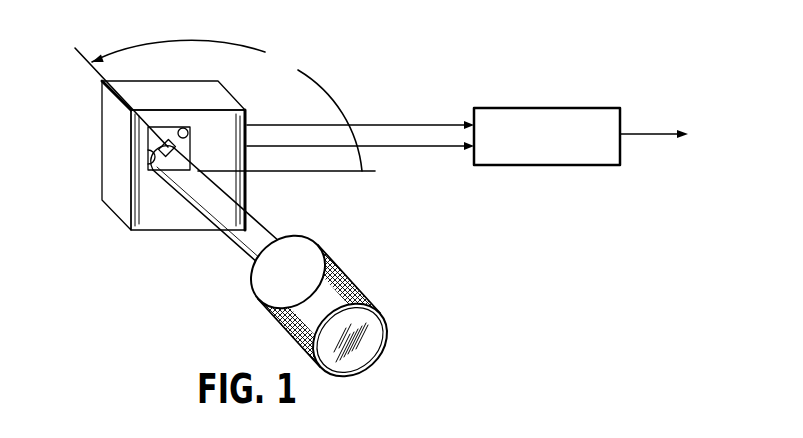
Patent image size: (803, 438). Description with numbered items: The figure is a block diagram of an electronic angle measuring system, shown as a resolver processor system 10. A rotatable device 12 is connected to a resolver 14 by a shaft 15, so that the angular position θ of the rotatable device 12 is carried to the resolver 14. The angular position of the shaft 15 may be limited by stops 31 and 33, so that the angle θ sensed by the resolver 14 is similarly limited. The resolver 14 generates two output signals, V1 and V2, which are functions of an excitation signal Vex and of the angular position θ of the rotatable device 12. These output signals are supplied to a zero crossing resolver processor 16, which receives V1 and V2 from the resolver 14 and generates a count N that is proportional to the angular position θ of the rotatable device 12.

The resolver processor system 10 is at (400, 66).
The rotatable device 12 is at (378, 327).
The resolver 14 is at (143, 75).
The shaft 15 is at (250, 228).
The zero crossing resolver processor 16 is at (481, 135).
The stop 31 is at (181, 131).
The stop 33 is at (150, 152).